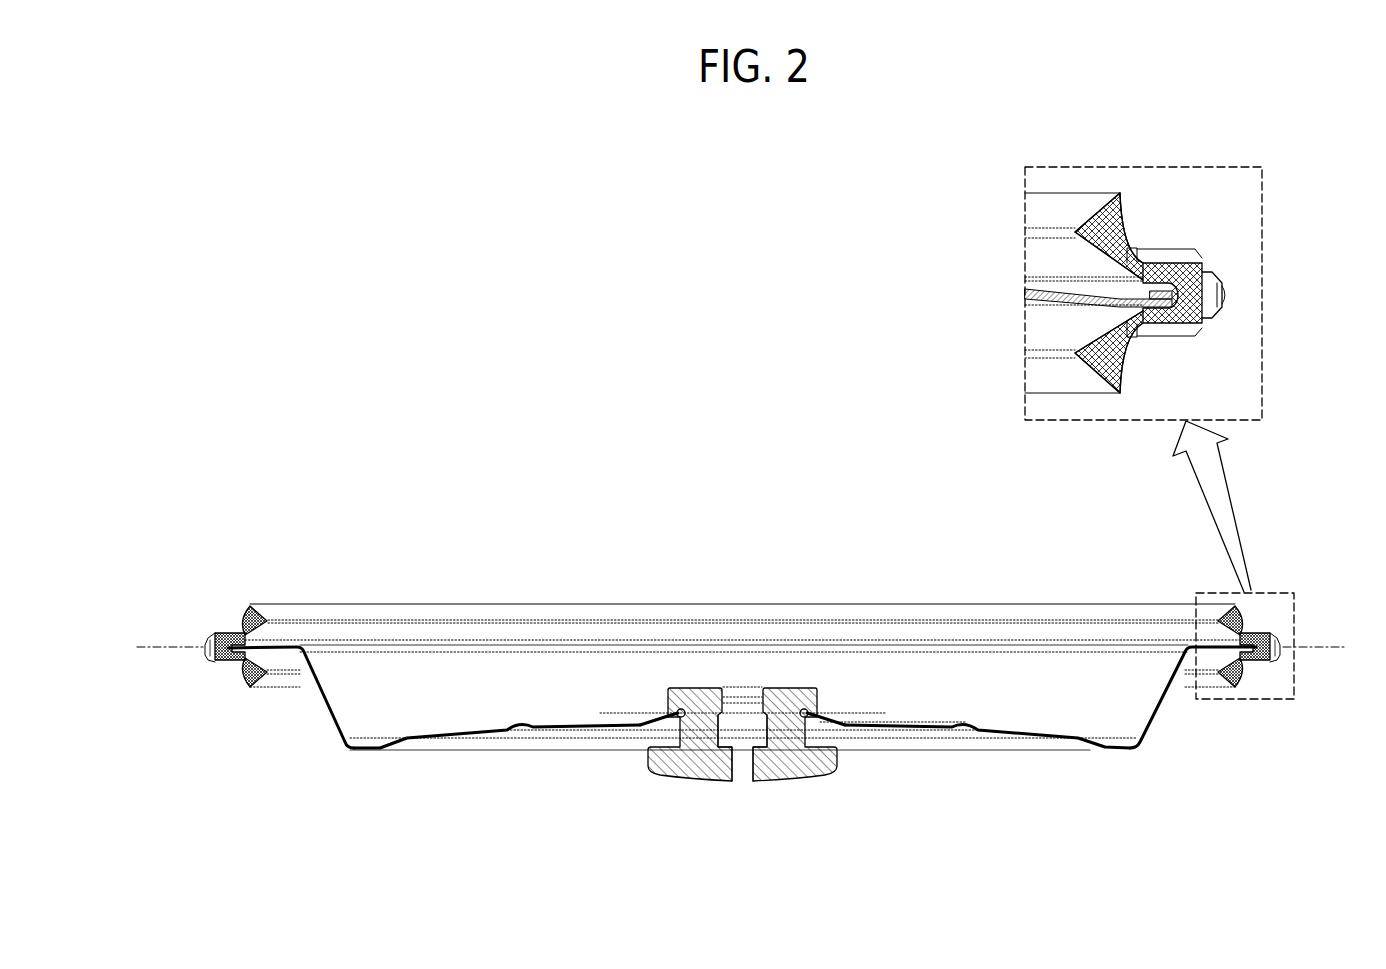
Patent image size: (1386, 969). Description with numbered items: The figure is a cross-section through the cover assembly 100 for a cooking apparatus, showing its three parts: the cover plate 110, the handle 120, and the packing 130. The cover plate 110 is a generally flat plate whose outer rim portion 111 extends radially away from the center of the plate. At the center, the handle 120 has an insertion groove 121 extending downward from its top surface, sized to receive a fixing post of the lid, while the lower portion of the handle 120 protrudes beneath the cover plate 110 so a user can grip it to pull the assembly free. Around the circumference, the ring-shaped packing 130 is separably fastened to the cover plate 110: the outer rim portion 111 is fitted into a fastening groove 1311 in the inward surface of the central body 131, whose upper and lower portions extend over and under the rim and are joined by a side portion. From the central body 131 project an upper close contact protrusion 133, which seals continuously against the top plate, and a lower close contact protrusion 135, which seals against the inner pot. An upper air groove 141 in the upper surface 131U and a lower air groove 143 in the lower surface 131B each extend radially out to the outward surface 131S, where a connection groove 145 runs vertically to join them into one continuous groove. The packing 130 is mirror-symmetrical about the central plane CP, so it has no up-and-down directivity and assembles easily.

The cover assembly 100 is at (338, 489).
The cover plate 110 is at (1090, 750).
The outer rim portion 111 is at (1218, 645).
The handle 120 is at (790, 763).
The insertion groove 121 is at (748, 725).
The packing 130 is at (238, 615).
The central body 131 is at (1267, 637).
The upper surface of the central body 131U is at (1183, 248).
The lower surface of head portion 131B is at (1187, 335).
The outward surface of the central body 131S is at (1223, 302).
The fastening groove 1311 is at (1158, 291).
The upper close contact protrusion 133 is at (1230, 612).
The lower close contact protrusion 135 is at (1227, 690).
The upper air groove 141 is at (1157, 258).
The lower air groove 143 is at (1165, 328).
The connection groove 145 is at (1208, 295).
The central plane CP is at (1340, 642).